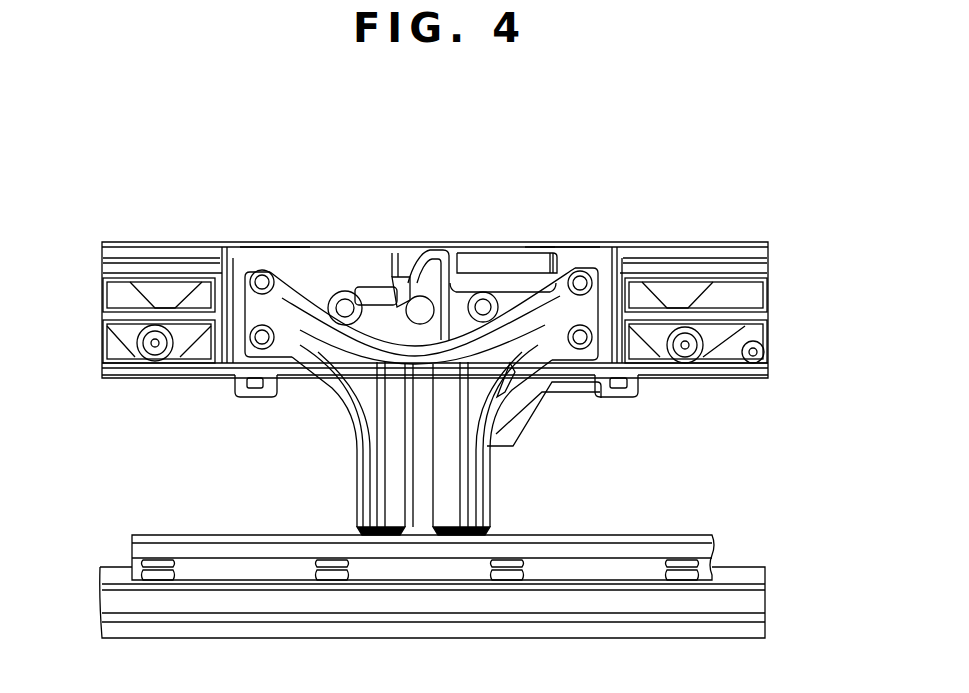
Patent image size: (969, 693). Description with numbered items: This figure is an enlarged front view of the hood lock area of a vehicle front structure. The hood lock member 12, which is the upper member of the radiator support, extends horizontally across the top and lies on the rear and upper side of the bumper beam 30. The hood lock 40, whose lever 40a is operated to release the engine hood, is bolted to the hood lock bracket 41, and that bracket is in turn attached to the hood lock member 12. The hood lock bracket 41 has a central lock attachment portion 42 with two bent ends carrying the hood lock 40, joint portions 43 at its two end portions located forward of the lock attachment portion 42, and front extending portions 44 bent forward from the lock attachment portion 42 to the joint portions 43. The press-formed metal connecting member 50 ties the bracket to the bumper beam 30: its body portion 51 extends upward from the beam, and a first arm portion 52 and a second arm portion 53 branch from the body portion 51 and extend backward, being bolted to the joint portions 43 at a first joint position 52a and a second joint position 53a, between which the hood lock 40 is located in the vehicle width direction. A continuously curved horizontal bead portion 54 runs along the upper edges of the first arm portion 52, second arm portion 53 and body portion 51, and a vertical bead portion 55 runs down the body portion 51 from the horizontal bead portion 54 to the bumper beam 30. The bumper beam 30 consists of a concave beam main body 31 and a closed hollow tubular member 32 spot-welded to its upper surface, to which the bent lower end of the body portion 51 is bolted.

The hood lock member 12 is at (613, 255).
The bumper beam 30 is at (486, 584).
The beam main body 31 is at (461, 602).
The tubular member 32 is at (703, 550).
The hood lock 40 is at (432, 247).
The lever 40a is at (398, 280).
The hood lock bracket 41 is at (483, 270).
The lock attachment portion 42 is at (330, 300).
The joint portions 43 is at (270, 247).
The front extending portions 44 is at (297, 247).
The connecting member 50 is at (434, 401).
The body portion 51 is at (385, 482).
The first arm portion 52 is at (162, 312).
The first joint position 52a is at (262, 280).
The second arm portion 53 is at (695, 273).
The second joint position 53a is at (580, 283).
The horizontal bead portion 54 is at (377, 303).
The vertical bead portion 55 is at (423, 483).